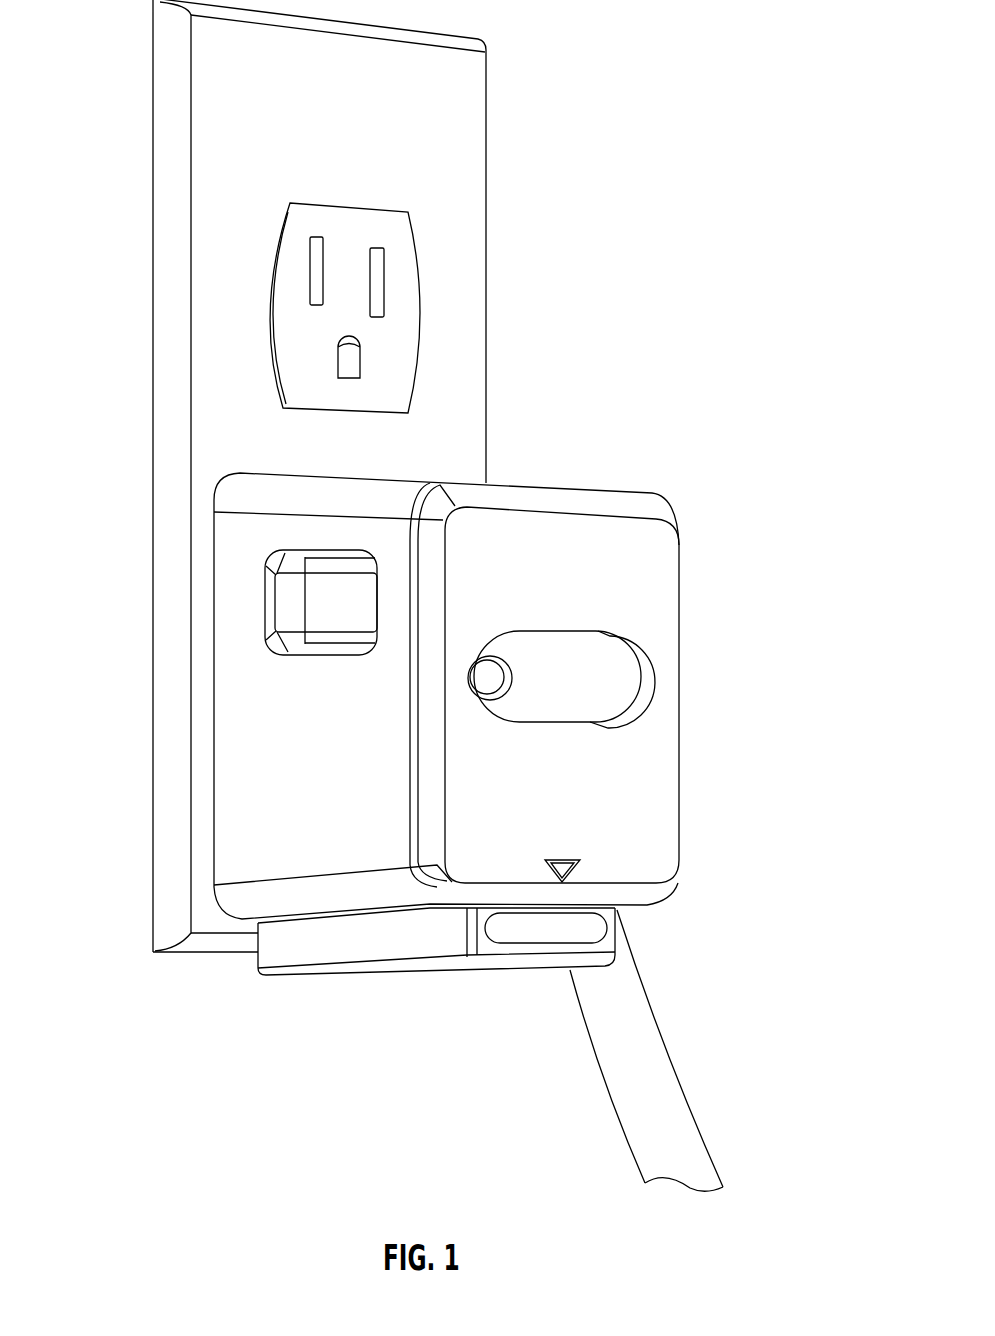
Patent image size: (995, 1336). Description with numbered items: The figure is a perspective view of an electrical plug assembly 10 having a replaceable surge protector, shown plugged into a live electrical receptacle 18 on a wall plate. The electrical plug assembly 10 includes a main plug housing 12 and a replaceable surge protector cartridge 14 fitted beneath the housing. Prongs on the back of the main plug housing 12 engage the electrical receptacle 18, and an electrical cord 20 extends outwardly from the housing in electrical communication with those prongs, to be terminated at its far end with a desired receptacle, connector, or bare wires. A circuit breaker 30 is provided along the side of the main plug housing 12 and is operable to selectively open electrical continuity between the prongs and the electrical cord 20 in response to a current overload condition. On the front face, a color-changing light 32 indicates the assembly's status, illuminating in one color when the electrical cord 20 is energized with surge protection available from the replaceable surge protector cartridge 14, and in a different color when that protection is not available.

The electrical plug assembly 10 is at (568, 432).
The main plug housing 12 is at (667, 792).
The replaceable surge protector cartridge 14 is at (298, 948).
The electrical receptacle 18 is at (440, 243).
The electrical cord 20 is at (620, 1088).
The circuit breaker 30 is at (292, 602).
The color-changing light 32 is at (647, 670).